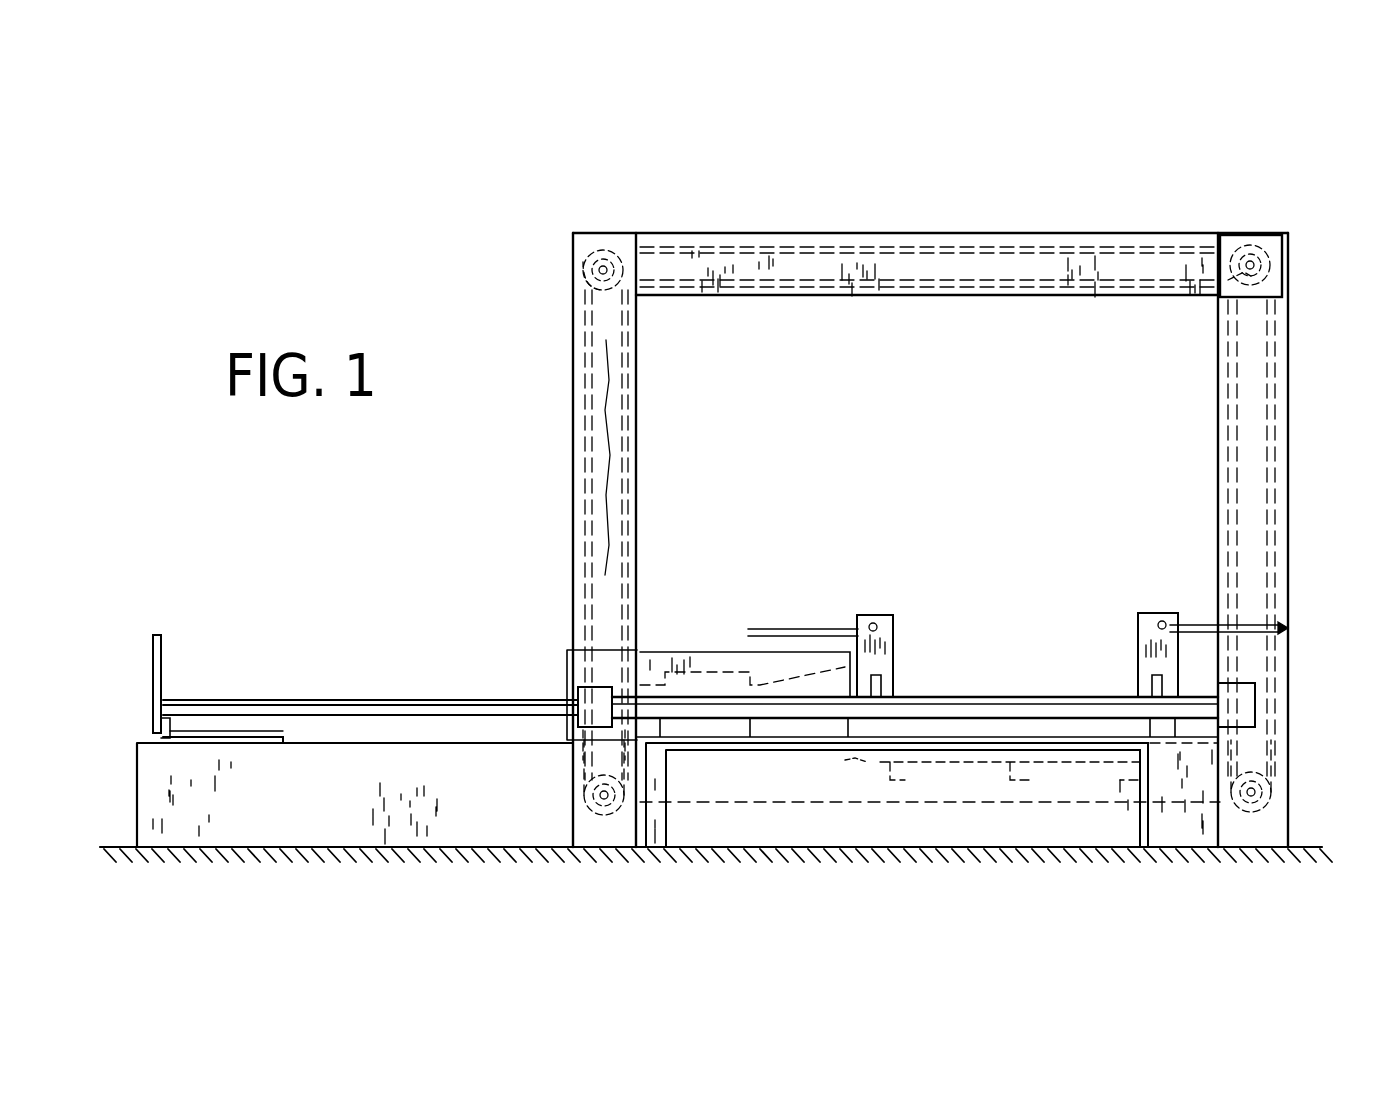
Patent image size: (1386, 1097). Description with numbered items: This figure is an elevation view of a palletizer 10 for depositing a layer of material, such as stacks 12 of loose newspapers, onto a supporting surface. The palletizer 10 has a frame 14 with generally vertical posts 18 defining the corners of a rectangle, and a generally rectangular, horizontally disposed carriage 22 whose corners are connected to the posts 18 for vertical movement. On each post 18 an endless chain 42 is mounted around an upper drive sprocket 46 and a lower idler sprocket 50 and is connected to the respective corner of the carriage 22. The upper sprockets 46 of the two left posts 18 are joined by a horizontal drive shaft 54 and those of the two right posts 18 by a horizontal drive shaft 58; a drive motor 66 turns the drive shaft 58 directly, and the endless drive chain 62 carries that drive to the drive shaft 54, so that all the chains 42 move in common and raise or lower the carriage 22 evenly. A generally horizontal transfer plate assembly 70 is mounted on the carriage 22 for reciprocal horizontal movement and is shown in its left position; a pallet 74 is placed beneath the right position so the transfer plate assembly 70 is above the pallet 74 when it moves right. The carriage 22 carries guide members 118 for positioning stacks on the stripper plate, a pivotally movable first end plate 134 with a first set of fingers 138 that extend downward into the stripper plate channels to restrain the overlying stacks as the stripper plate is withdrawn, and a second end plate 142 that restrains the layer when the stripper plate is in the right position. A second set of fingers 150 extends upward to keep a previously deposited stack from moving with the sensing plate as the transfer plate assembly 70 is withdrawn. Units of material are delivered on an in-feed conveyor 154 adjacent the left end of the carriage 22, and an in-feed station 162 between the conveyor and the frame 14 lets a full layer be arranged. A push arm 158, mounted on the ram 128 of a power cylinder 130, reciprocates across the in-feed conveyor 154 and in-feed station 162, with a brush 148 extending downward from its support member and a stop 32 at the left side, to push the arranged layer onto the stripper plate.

The palletizer 10 is at (806, 222).
The stacks 12 is at (848, 665).
The frame 14 is at (1304, 406).
The posts 18 is at (610, 507).
The carriage 22 is at (1195, 790).
The stop 32 is at (152, 680).
The endless chain 42 is at (590, 443).
The upper drive sprocket 46 is at (605, 258).
The lower idler sprocket 50 is at (585, 790).
The horizontal drive shaft 54 is at (583, 280).
The horizontal drive shaft 58 is at (1232, 300).
The endless drive chain 62 is at (983, 250).
The drive motor 66 is at (1268, 235).
The transfer plate assembly 70 is at (714, 755).
The pallet 74 is at (1015, 780).
The guide members 118 is at (808, 660).
The ram 128 is at (383, 700).
The power cylinder 130 is at (970, 697).
The first end plate 134 is at (858, 625).
The first set of fingers 138 is at (748, 632).
The second end plate 142 is at (1185, 578).
The brush 148 is at (165, 738).
The second set of fingers 150 is at (860, 762).
The in-feed conveyor 154 is at (238, 740).
The push arm 158 is at (152, 662).
The in-feed station 162 is at (478, 742).